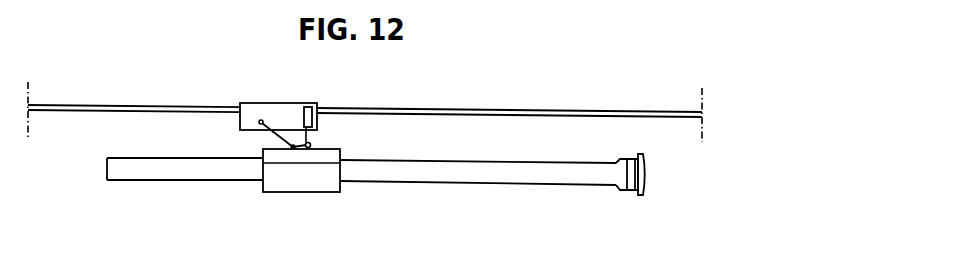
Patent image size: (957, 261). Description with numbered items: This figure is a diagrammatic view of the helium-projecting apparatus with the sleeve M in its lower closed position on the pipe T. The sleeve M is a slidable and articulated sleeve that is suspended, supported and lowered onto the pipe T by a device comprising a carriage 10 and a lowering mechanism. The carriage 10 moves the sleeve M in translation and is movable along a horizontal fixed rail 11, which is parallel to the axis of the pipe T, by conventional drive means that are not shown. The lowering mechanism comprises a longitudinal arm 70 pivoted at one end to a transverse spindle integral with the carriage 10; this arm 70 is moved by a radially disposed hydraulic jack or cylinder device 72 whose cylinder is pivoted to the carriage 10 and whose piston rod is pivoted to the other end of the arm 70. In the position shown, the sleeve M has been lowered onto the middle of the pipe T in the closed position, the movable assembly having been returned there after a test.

The carriage 10 is at (275, 108).
The rail 11 is at (482, 108).
The longitudinal arm 70 is at (278, 135).
The hydraulic jack or cylinder device 72 is at (307, 106).
The sleeve M is at (308, 173).
The pipe T is at (582, 172).